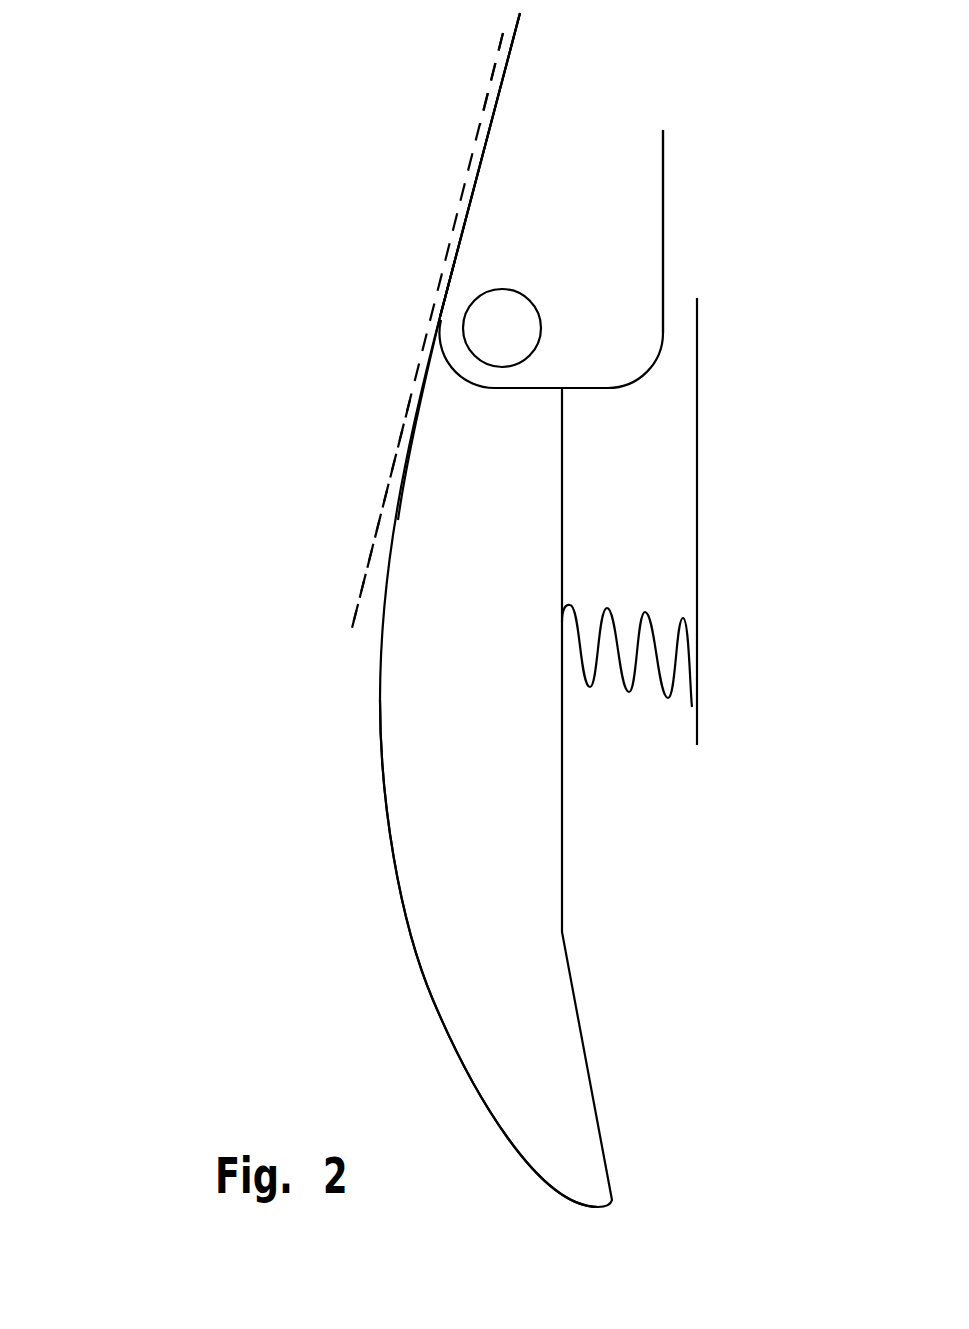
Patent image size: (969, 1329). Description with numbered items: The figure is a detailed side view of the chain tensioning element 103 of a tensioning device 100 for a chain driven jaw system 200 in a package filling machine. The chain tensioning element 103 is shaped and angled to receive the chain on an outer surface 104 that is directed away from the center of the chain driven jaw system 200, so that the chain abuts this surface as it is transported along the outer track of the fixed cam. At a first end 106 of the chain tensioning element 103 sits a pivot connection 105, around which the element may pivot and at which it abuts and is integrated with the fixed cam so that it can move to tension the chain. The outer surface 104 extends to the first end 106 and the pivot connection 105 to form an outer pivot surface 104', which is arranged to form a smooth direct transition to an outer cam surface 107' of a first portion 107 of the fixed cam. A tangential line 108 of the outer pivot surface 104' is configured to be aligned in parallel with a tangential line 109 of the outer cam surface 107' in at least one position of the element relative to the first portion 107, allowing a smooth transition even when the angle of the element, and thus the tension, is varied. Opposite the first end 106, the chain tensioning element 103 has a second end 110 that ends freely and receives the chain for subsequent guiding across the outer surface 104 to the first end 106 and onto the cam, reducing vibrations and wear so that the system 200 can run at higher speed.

The tensioning device 100 is at (170, 38).
The chain driven jaw system 200 is at (170, 38).
The chain tensioning element 103 is at (433, 933).
The outer surface 104 is at (394, 953).
The outer pivot surface 104' is at (347, 403).
The pivot connection 105 is at (518, 290).
The first end 106 is at (270, 360).
The first portion 107 is at (411, 165).
The outer cam surface 107' is at (361, 268).
The tangential line 108 is at (385, 485).
The tangential line 109 is at (482, 125).
The second end 110 is at (728, 1085).